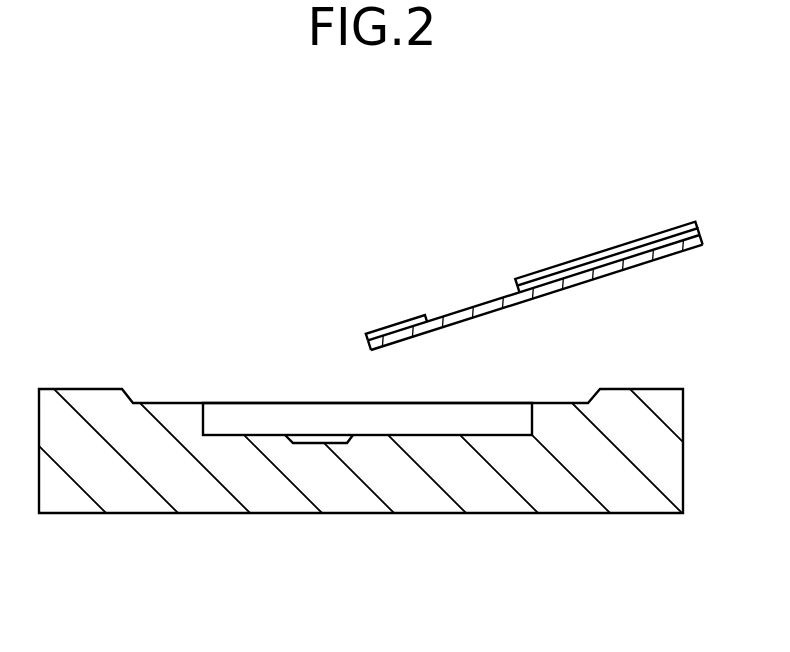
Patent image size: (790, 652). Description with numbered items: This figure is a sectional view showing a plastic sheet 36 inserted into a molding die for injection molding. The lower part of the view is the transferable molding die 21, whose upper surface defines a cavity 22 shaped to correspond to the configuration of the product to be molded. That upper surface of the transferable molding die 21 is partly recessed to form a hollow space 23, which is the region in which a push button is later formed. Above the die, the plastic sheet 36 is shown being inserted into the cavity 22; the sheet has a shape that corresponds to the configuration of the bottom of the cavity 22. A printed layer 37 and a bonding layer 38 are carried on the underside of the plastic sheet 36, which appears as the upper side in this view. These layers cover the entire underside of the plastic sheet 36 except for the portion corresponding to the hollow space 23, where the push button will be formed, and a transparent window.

The transferable molding die 21 is at (567, 522).
The cavity 22 is at (237, 417).
The hollow space 23 is at (317, 437).
The plastic sheet 36 is at (606, 277).
The printed layer 37 is at (368, 341).
The bonding layer 38 is at (404, 318).